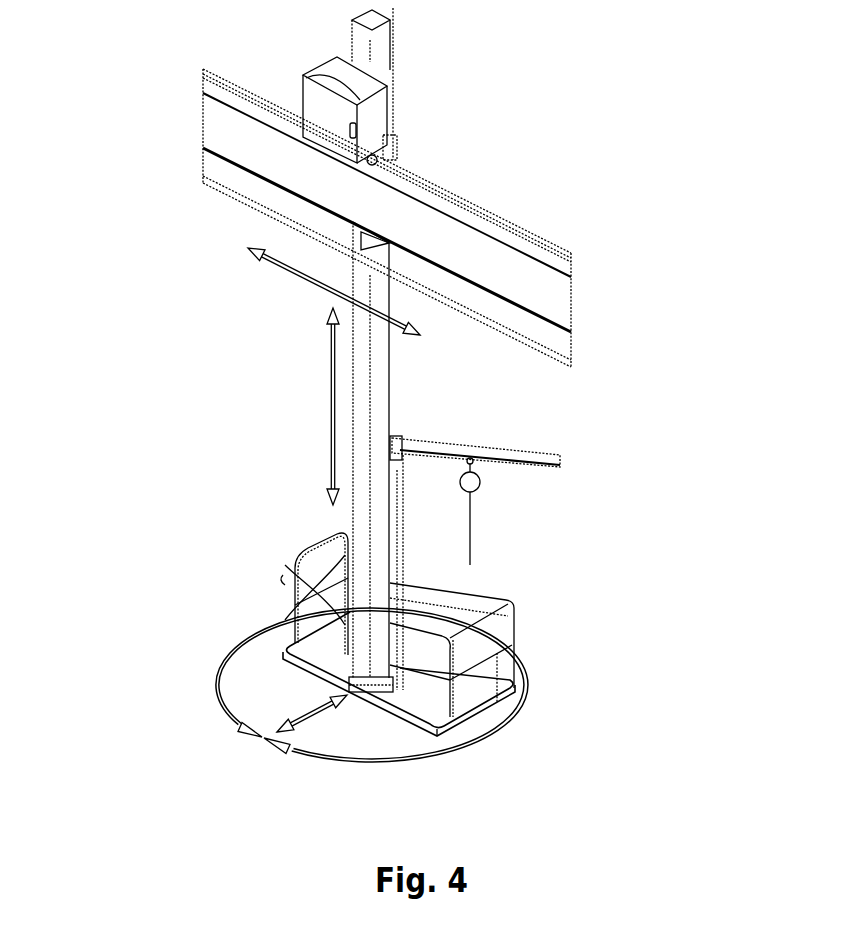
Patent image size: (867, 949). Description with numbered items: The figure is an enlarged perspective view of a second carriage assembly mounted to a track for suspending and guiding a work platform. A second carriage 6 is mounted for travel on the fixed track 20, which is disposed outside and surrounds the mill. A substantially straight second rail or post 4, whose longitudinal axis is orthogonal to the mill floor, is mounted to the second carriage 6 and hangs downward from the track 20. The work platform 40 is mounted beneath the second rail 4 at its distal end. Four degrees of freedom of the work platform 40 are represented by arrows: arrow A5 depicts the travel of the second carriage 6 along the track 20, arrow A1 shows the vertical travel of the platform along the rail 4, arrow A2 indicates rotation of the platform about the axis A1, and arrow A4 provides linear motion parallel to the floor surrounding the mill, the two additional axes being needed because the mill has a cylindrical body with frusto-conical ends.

The second rail or post 4 is at (367, 353).
The second carriage 6 is at (370, 113).
The fixed track 20 is at (538, 295).
The work platform 40 is at (503, 728).
The arrow A1 is at (327, 422).
The arrow A2 is at (215, 690).
The arrow A4 is at (308, 712).
The arrow A5 is at (293, 270).